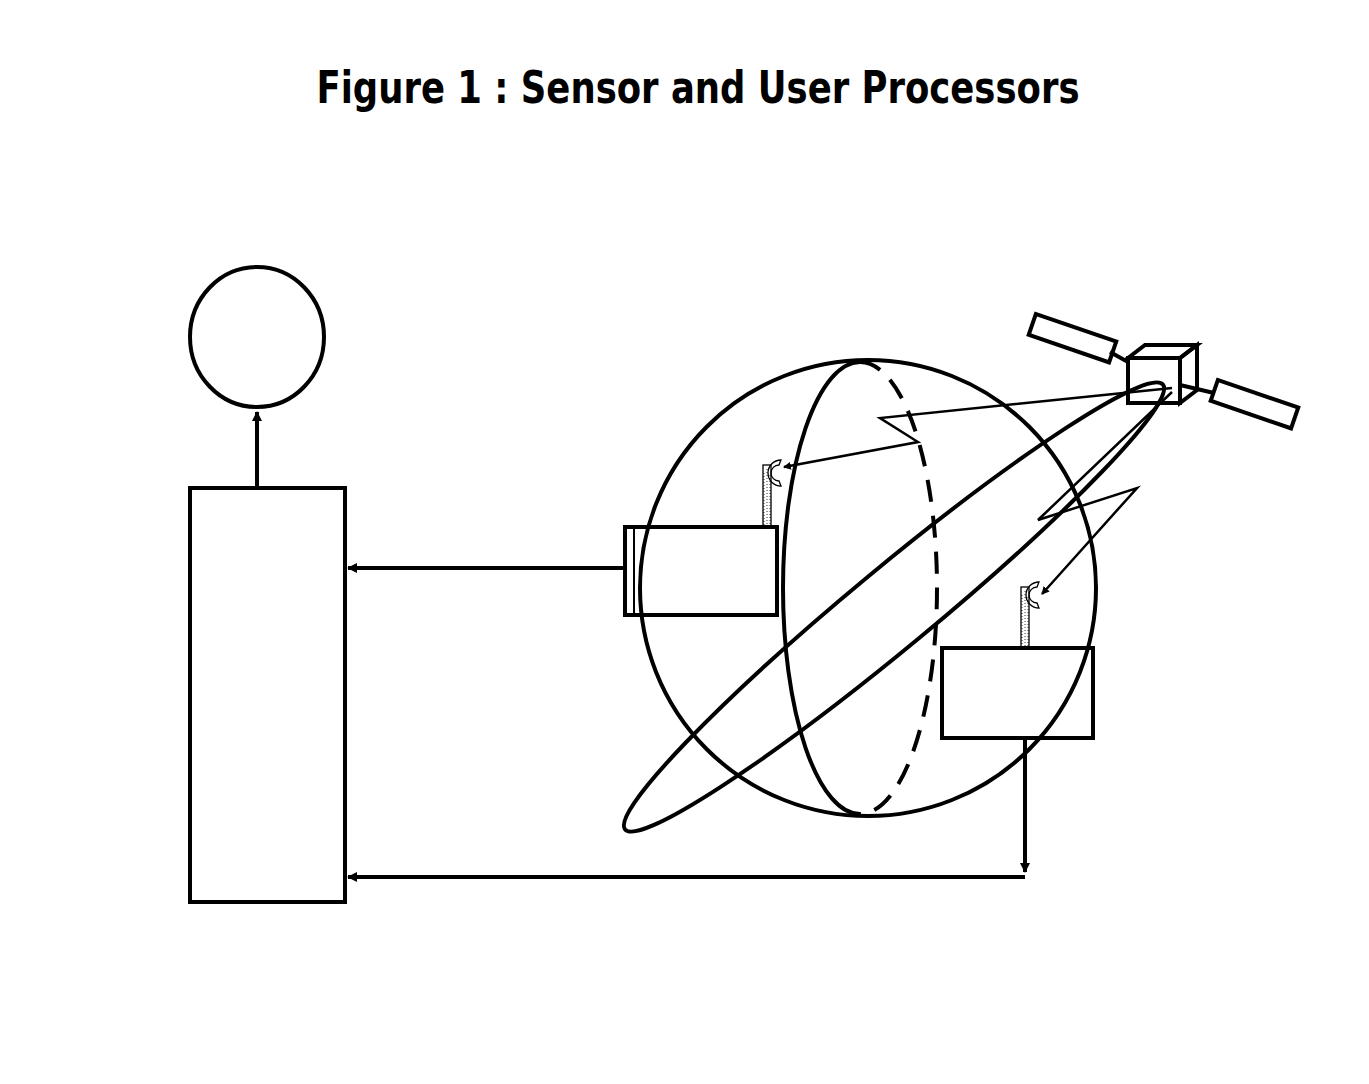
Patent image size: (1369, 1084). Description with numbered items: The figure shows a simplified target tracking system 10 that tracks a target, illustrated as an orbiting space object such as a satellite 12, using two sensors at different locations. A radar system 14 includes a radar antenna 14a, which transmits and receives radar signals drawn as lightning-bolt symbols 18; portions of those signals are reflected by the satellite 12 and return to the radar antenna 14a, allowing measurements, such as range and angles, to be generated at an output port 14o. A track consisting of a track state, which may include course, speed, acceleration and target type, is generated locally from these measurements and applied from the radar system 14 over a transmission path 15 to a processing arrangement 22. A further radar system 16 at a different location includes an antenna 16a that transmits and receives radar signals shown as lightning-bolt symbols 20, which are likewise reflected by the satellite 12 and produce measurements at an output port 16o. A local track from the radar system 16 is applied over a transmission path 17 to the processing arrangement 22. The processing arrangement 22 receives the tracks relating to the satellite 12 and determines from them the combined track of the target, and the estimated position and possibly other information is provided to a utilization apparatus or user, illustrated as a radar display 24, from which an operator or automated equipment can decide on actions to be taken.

The target tracking system 10 is at (612, 358).
The satellite 12 is at (1164, 388).
The radar system 14 is at (1046, 693).
The radar antenna 14a is at (1057, 615).
The output port 14o is at (723, 830).
The transmission path 15 is at (460, 836).
The further radar system 16 is at (701, 594).
The antenna 16a is at (779, 475).
The output port 16o is at (486, 556).
The transmission path 17 is at (453, 536).
The radar signals 18 is at (1105, 493).
The radar signals 20 is at (894, 607).
The processing arrangement 22 is at (267, 695).
The radar display 24 is at (257, 377).